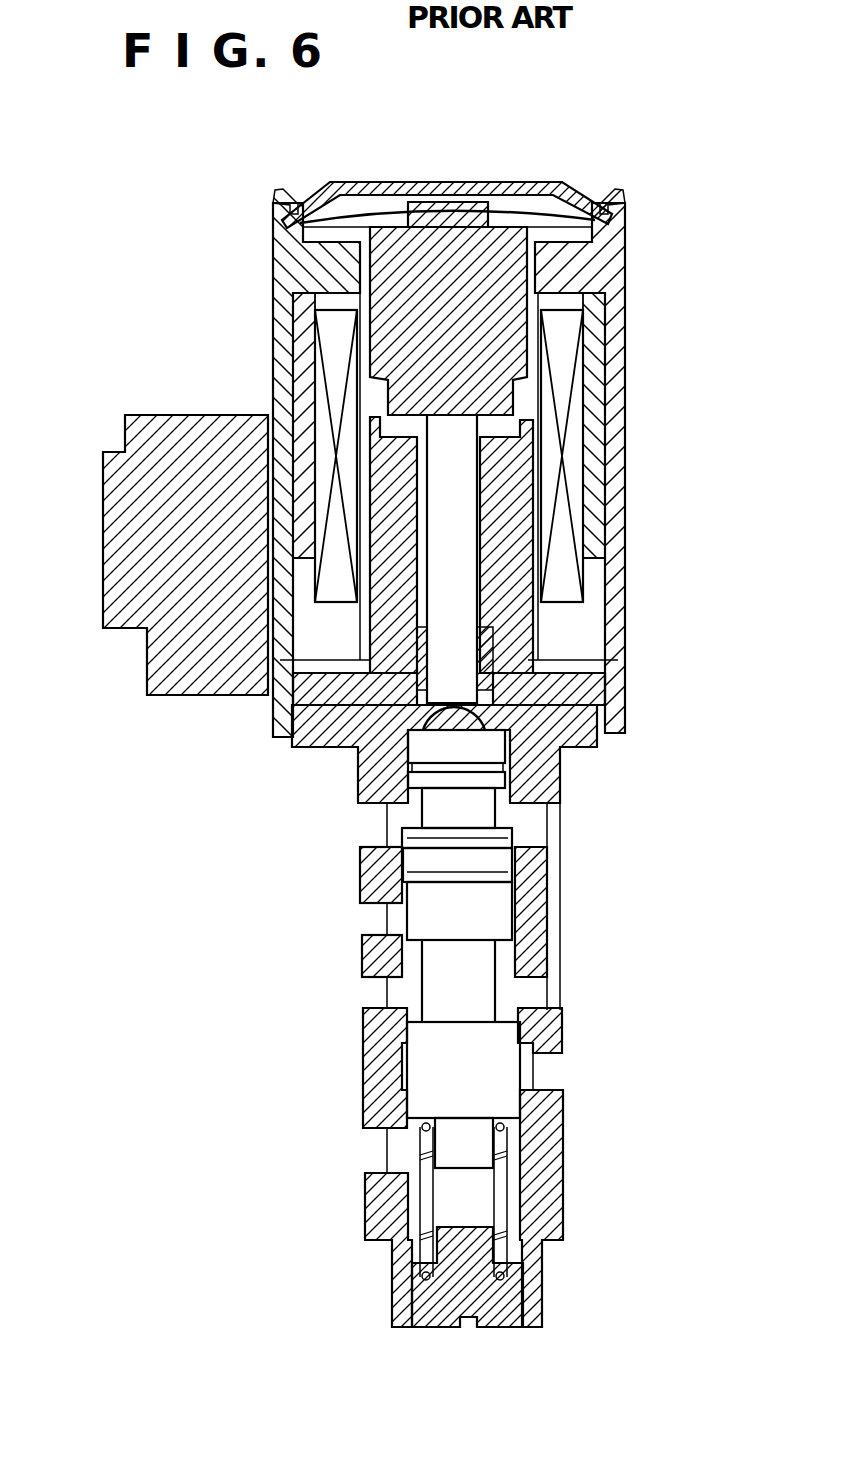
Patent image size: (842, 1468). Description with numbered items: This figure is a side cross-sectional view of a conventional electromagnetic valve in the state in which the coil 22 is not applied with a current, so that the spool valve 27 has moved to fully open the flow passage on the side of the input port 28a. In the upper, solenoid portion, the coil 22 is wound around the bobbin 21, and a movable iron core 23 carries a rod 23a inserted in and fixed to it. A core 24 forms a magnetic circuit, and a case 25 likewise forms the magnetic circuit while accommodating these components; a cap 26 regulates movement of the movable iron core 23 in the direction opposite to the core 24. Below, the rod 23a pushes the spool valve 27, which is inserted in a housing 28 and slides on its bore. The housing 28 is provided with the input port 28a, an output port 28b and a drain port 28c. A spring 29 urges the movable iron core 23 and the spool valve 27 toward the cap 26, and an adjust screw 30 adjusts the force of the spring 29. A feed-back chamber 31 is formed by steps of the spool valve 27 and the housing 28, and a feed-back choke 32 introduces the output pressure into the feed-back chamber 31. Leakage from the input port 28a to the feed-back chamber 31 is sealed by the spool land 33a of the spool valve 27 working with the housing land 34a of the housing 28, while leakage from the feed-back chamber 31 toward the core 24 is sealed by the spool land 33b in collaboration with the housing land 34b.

The bobbin 21 is at (140, 457).
The coil 22 is at (322, 416).
The movable iron core 23 is at (493, 278).
The rod 23a is at (452, 488).
The core 24 is at (592, 690).
The case 25 is at (273, 288).
The cap 26 is at (460, 183).
The spool valve 27 is at (500, 1097).
The housing 28 is at (372, 1198).
The input port 28a is at (377, 922).
The output port 28b is at (377, 995).
The drain port 28c is at (543, 1072).
The spring 29 is at (505, 1200).
The adjust screw 30 is at (440, 1302).
The feed-back chamber 31 is at (505, 815).
The feed-back choke 32 is at (530, 835).
The spool land 33a is at (427, 898).
The spool land 33b is at (430, 743).
The housing land 34a is at (525, 877).
The housing land 34b is at (510, 770).